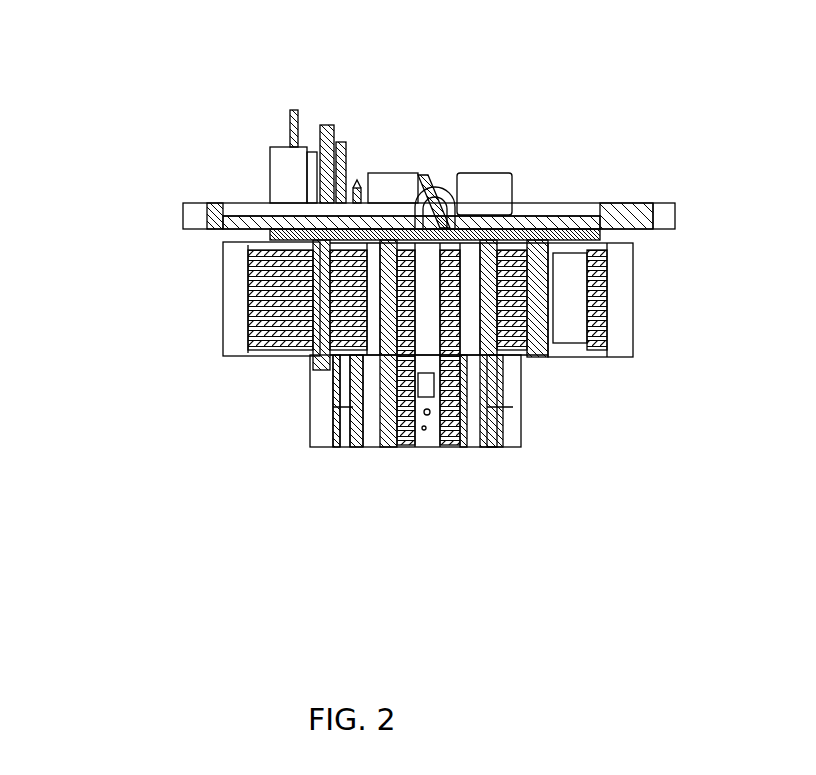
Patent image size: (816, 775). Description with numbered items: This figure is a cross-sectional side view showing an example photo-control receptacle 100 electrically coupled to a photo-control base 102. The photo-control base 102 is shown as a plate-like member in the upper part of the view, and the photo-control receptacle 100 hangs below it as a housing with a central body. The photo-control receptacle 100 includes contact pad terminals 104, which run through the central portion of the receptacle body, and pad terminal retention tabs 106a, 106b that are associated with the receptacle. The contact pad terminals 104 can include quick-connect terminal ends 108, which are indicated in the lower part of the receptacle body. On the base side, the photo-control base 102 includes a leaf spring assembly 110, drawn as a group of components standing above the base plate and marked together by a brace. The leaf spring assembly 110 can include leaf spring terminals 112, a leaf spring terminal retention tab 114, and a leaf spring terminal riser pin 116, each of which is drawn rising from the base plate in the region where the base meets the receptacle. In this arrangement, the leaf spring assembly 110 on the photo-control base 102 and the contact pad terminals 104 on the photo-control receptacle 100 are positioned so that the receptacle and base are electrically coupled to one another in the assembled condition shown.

The photo-control receptacle 100 is at (265, 282).
The photo-control base 102 is at (217, 213).
The contact pad terminals 104 is at (427, 350).
The pad terminal retention tab 106a is at (492, 257).
The pad terminal retention tab 106b is at (436, 390).
The quick-connect terminal ends 108 is at (423, 432).
The leaf spring assembly 110 is at (258, 108).
The leaf spring terminals 112 is at (376, 215).
The leaf spring terminal retention tab 114 is at (359, 182).
The leaf spring terminal riser pin 116 is at (340, 130).